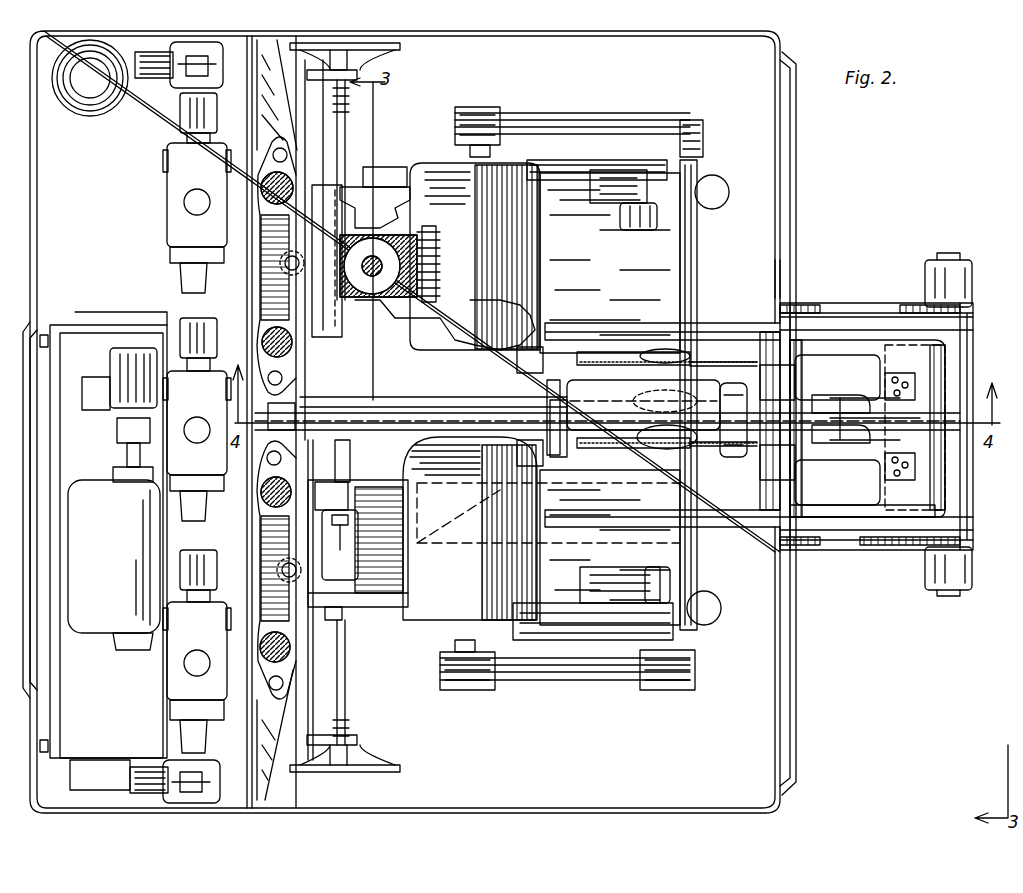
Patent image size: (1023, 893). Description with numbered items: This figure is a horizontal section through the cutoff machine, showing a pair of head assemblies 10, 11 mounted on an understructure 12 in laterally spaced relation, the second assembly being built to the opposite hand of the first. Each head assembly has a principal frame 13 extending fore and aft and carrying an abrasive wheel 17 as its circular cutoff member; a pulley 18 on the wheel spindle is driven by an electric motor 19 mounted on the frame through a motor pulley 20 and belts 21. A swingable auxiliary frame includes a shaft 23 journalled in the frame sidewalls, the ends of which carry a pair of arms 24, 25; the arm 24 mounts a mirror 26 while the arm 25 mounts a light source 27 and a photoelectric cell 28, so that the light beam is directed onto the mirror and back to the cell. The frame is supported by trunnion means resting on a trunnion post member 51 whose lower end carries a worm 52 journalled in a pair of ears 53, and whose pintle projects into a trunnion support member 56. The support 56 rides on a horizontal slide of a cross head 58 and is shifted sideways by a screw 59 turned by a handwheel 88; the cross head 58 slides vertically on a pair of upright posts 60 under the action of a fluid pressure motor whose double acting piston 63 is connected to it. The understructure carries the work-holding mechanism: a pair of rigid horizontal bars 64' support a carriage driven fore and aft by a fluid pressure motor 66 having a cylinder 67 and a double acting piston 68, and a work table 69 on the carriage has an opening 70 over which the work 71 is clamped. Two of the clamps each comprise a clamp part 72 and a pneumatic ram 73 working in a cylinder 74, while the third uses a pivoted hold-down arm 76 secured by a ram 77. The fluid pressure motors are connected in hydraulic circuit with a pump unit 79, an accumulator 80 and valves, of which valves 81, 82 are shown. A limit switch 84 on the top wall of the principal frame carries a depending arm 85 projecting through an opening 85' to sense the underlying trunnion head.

The head assembly 10 is at (602, 257).
The head assembly 11 is at (575, 569).
The understructure 12 is at (462, 808).
The principal frame 13 is at (690, 255).
The abrasive wheel 17 is at (715, 392).
The pulley 18 is at (695, 120).
The electric motor 19 is at (455, 335).
The motor pulley 20 is at (480, 110).
The belts 21 is at (585, 130).
The shaft 23 is at (515, 350).
The arm 24 is at (595, 349).
The arm 25 is at (585, 175).
The mirror 26 is at (659, 407).
The light source 27 is at (612, 205).
The photoelectric cell 28 is at (646, 403).
The trunnion post member 51 is at (400, 300).
The worm 52 is at (439, 264).
The ears 53 is at (415, 242).
The trunnion support member 56 is at (358, 410).
The cross head 58 is at (262, 255).
The screw 59 is at (340, 407).
The upright posts 60 is at (262, 170).
The double acting piston 63 is at (268, 240).
The rigid horizontal bars 64' is at (662, 413).
The fluid pressure motor 66 is at (390, 410).
The cylinder 67 is at (444, 405).
The double acting piston 68 is at (548, 400).
The work table 69 is at (830, 315).
The opening 70 is at (852, 517).
The work 71 is at (877, 417).
The clamp part 72 is at (902, 422).
The ram 73 is at (860, 485).
The cylinder 74 is at (772, 375).
The hold-down arm 76 is at (841, 435).
The ram 77 is at (841, 417).
The pump unit 79 is at (103, 535).
The accumulator 80 is at (83, 114).
The valve 81 is at (178, 196).
The valve 82 is at (180, 80).
The limit switch 84 is at (345, 490).
The arm 85 is at (340, 545).
The opening 85' is at (364, 532).
The handwheel 88 is at (402, 47).